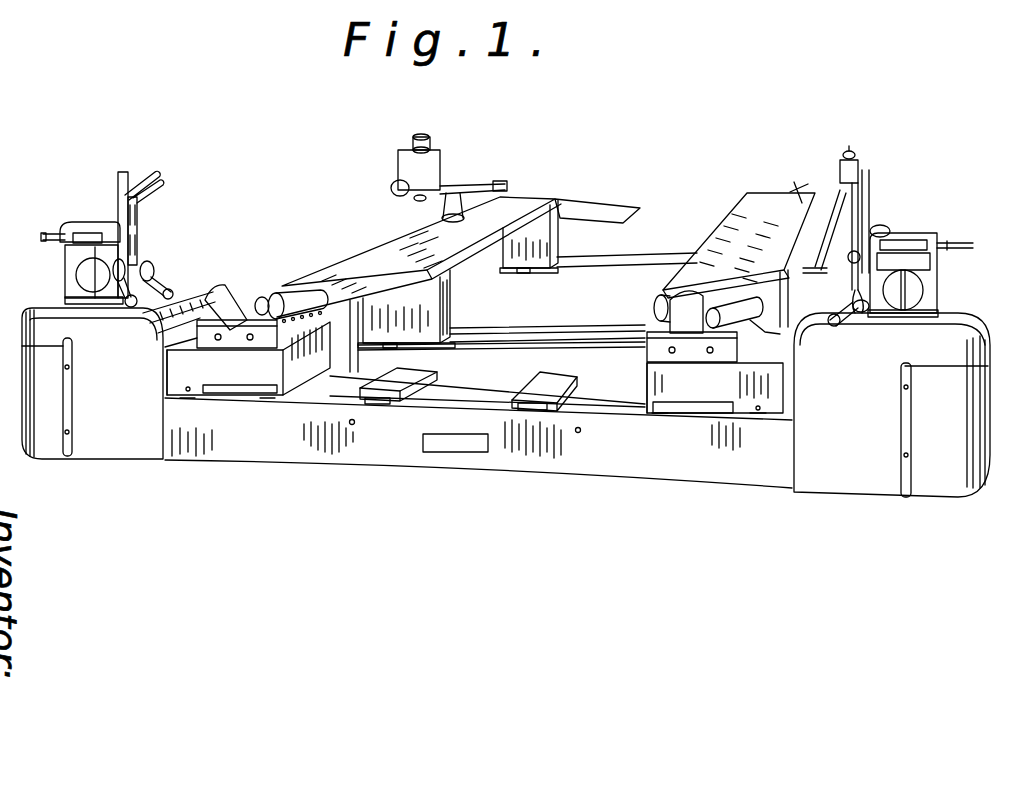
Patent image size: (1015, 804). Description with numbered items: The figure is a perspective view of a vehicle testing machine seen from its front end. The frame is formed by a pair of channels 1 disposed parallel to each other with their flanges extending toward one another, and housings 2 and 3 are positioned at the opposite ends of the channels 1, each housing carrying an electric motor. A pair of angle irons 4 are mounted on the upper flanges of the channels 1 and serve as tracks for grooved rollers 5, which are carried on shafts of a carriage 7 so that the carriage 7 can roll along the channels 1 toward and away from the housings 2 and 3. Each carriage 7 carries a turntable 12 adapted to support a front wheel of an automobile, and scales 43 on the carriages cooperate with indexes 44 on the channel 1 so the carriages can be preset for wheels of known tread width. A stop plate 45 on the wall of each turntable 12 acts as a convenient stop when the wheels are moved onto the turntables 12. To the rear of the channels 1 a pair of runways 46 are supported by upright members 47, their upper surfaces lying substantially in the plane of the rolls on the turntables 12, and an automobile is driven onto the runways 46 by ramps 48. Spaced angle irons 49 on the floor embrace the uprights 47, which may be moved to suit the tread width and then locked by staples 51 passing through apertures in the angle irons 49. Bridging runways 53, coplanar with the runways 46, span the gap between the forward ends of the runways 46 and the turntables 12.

The channels 1 is at (517, 457).
The right hand housing 2 is at (117, 440).
The left hand housing 3 is at (877, 472).
The angle irons 4 is at (492, 380).
The grooved rollers 5 is at (187, 400).
The carriage 7 is at (231, 369).
The turntables 12 is at (235, 338).
The scales 43 is at (247, 393).
The indexes 44 is at (252, 402).
The stop plate 45 is at (253, 268).
The runways 46 is at (425, 240).
The upright members 47 is at (450, 302).
The ramps 48 is at (580, 208).
The angle irons 49 is at (633, 258).
The staples 51 is at (527, 273).
The bridging runways 53 is at (312, 282).